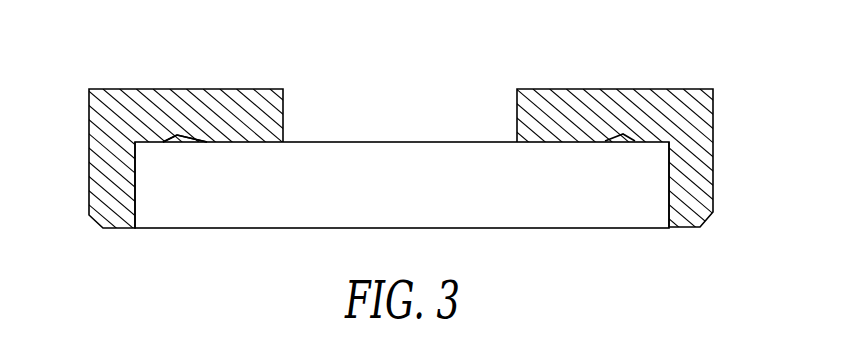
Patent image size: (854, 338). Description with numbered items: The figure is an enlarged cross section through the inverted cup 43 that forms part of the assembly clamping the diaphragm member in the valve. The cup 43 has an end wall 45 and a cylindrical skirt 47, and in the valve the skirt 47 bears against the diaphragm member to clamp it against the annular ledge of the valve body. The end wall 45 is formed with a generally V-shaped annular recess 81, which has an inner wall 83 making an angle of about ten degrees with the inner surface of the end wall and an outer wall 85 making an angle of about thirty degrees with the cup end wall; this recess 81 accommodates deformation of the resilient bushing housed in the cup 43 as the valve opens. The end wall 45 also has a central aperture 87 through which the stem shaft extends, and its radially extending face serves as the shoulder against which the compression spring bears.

The inverted cup 43 is at (400, 43).
The end wall 45 is at (207, 92).
The cylindrical skirt 47 is at (95, 178).
The V-shaped annular recess 81 is at (177, 135).
The inner wall 83 is at (181, 145).
The outer wall 85 is at (176, 144).
The central aperture 87 is at (516, 99).